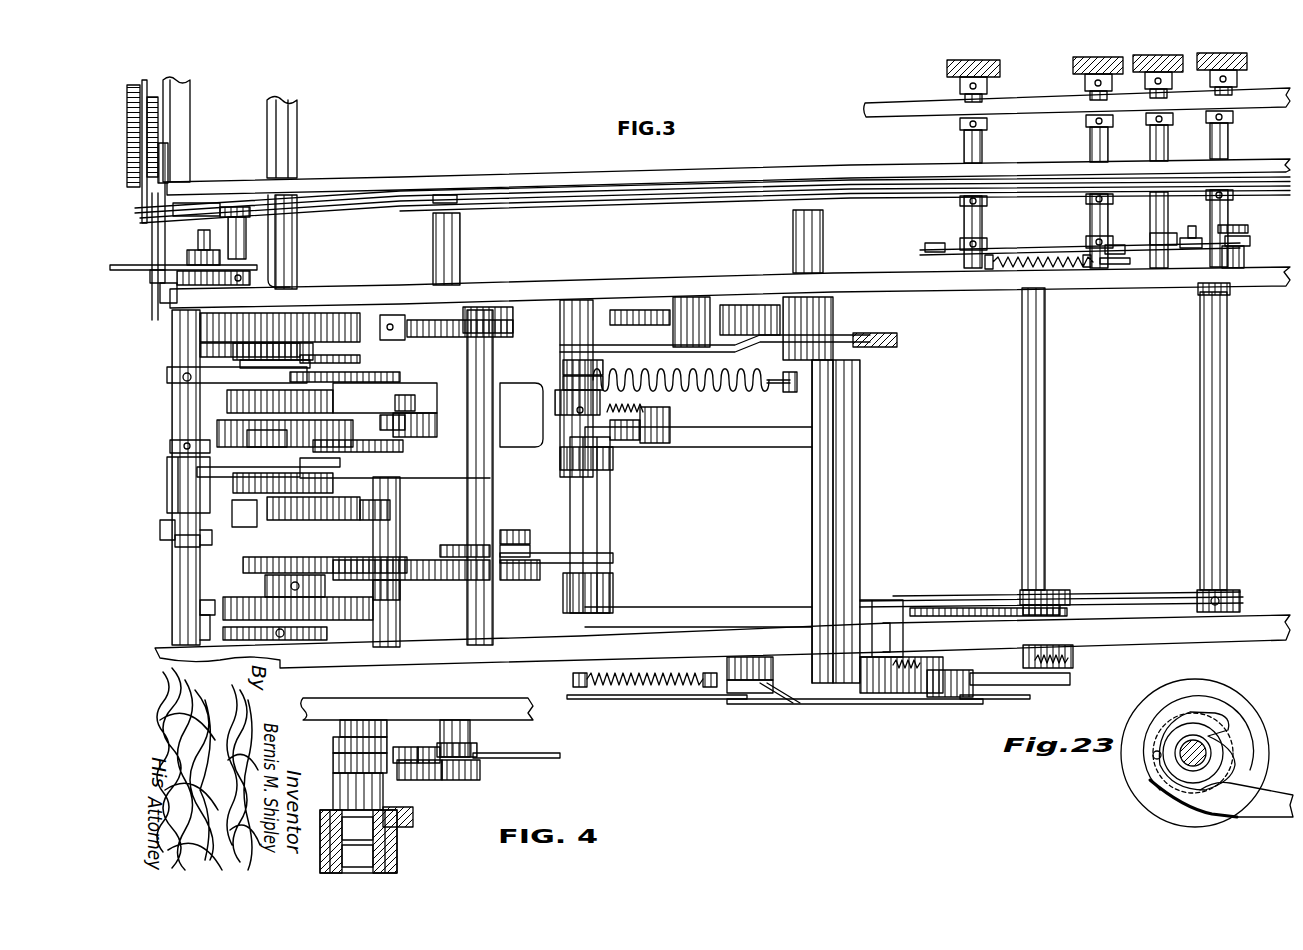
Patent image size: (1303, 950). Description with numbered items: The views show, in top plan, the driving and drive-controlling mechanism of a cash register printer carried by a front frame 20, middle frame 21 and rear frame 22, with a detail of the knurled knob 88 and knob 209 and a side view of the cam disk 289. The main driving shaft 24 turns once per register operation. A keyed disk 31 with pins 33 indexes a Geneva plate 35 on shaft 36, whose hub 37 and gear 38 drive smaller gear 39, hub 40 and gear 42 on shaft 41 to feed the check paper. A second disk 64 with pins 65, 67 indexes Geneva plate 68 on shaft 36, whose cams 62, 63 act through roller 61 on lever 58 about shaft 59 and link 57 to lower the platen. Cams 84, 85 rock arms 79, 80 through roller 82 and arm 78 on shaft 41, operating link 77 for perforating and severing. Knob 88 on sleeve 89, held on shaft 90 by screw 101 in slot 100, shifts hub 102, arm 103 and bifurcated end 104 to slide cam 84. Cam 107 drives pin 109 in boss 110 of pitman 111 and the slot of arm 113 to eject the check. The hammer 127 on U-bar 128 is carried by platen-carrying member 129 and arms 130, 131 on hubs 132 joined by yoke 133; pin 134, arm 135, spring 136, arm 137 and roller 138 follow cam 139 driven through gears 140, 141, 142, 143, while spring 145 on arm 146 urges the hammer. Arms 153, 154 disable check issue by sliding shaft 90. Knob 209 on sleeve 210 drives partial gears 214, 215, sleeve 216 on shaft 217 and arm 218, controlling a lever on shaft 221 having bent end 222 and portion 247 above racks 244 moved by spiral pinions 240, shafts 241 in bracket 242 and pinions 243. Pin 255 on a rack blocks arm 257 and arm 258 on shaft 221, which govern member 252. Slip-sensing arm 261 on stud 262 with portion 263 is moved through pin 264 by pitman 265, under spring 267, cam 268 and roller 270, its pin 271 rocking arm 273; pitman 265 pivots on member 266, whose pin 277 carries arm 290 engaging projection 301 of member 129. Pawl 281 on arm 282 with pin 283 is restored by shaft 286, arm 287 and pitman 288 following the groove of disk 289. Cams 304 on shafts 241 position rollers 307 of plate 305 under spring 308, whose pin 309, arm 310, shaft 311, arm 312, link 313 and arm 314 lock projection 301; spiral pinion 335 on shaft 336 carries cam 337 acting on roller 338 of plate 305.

In FIG. 3, the front frame 20 is at (1148, 640).
In FIG. 4, the front frame 20 is at (528, 720).
In FIG. 3, the middle frame 21 is at (1100, 290).
In FIG. 3, the rear frame 22 is at (855, 172).
In FIG. 3, the main driving shaft 24 is at (290, 160).
In FIG. 4, the main driving shaft 24 is at (455, 742).
In FIG. 23, the main driving shaft 24 is at (1183, 757).
In FIG. 3, the disk 31 is at (217, 420).
In FIG. 3, the pins 33 is at (227, 400).
In FIG. 3, the Geneva plate 35 is at (405, 425).
In FIG. 3, the shaft 36 is at (395, 535).
In FIG. 3, the hub 37 is at (370, 393).
In FIG. 3, the gear 38 is at (415, 405).
In FIG. 3, the smaller gear 39 is at (563, 383).
In FIG. 3, the hub 40 is at (563, 372).
In FIG. 3, the shaft 41 is at (500, 520).
In FIG. 3, the gear 42 is at (488, 340).
In FIG. 3, the link 57 is at (880, 340).
In FIG. 3, the lever 58 is at (680, 347).
In FIG. 3, the shaft 59 is at (603, 380).
In FIG. 3, the anti-friction roller 61 is at (395, 350).
In FIG. 3, the cam 62 is at (300, 378).
In FIG. 3, the cam 63 is at (320, 360).
In FIG. 3, the disk 64 is at (175, 450).
In FIG. 3, the pin 65 is at (220, 440).
In FIG. 3, the pin 67 is at (340, 452).
In FIG. 3, the Geneva plate 68 is at (410, 440).
In FIG. 3, the link 77 is at (660, 315).
In FIG. 3, the arm 78 is at (545, 322).
In FIG. 3, the arm 79 is at (345, 480).
In FIG. 3, the arm 80 is at (398, 520).
In FIG. 3, the anti-friction roller 82 is at (290, 490).
In FIG. 3, the cam 84 is at (257, 500).
In FIG. 3, the cam 85 is at (260, 525).
In FIG. 4, the knurled knob 88 is at (387, 852).
In FIG. 3, the sleeve 89 is at (208, 540).
In FIG. 3, the shaft 90 is at (172, 335).
In FIG. 3, the slot 100 is at (185, 545).
In FIG. 3, the screw 101 is at (170, 530).
In FIG. 3, the hub 102 is at (167, 470).
In FIG. 3, the arm 103 is at (232, 478).
In FIG. 3, the bifurcated end 104 is at (300, 464).
In FIG. 3, the cam 107 is at (280, 330).
In FIG. 3, the pin 109 is at (250, 368).
In FIG. 3, the boss 110 is at (230, 347).
In FIG. 3, the pitman 111 is at (330, 330).
In FIG. 3, the arm 113 is at (172, 377).
In FIG. 3, the hammer 127 is at (837, 437).
In FIG. 3, the U-bar 128 is at (835, 515).
In FIG. 3, the platen-carrying member 129 is at (815, 518).
In FIG. 3, the arm 130 is at (735, 438).
In FIG. 3, the arm 131 is at (680, 625).
In FIG. 3, the hubs 132 is at (563, 468).
In FIG. 3, the yoke 133 is at (590, 530).
In FIG. 3, the pin 134 is at (655, 405).
In FIG. 3, the arm 135 is at (652, 443).
In FIG. 3, the spring 136 is at (628, 443).
In FIG. 3, the arm 137 is at (545, 555).
In FIG. 3, the anti-friction roller 138 is at (522, 540).
In FIG. 3, the cam 139 is at (462, 537).
In FIG. 3, the gear 140 is at (515, 582).
In FIG. 3, the gear 141 is at (420, 590).
In FIG. 3, the gear 142 is at (410, 562).
In FIG. 3, the gear 143 is at (313, 567).
In FIG. 3, the spring 145 is at (740, 390).
In FIG. 3, the arm 146 is at (555, 400).
In FIG. 3, the arm 153 is at (160, 290).
In FIG. 3, the arm 154 is at (150, 276).
In FIG. 4, the knurled knob 209 is at (413, 815).
In FIG. 4, the sleeve 210 is at (372, 797).
In FIG. 4, the partial gear 214 is at (340, 758).
In FIG. 4, the partial gear 215 is at (345, 745).
In FIG. 3, the sleeve 216 is at (198, 628).
In FIG. 4, the sleeve 216 is at (380, 725).
In FIG. 3, the shaft 217 is at (195, 608).
In FIG. 3, the arm 218 is at (205, 265).
In FIG. 3, the shaft 221 is at (262, 235).
In FIG. 3, the bent end 222 is at (152, 318).
In FIG. 3, the spiral pinion 240 is at (1000, 66).
In FIG. 3, the shaft 241 is at (983, 150).
In FIG. 3, the bracket 242 is at (893, 105).
In FIG. 3, the pinion 243 is at (1092, 206).
In FIG. 3, the rack 244 is at (648, 207).
In FIG. 3, the portion 247 is at (273, 265).
In FIG. 3, the member 252 is at (140, 265).
In FIG. 3, the pin 255 is at (178, 208).
In FIG. 3, the arm 257 is at (218, 210).
In FIG. 3, the arm 258 is at (255, 285).
In FIG. 3, the arm 261 is at (820, 704).
In FIG. 3, the stud 262 is at (750, 662).
In FIG. 3, the upwardly extending portion 263 is at (978, 699).
In FIG. 3, the pin 264 is at (745, 698).
In FIG. 3, the pitman 265 is at (612, 699).
In FIG. 4, the pitman 265 is at (555, 758).
In FIG. 3, the member 266 is at (905, 695).
In FIG. 3, the spring 267 is at (630, 684).
In FIG. 4, the cam 268 is at (470, 782).
In FIG. 4, the roller 270 is at (420, 782).
In FIG. 4, the pin 271 is at (418, 750).
In FIG. 4, the arm 273 is at (400, 750).
In FIG. 3, the pin 277 is at (950, 698).
In FIG. 3, the pawl 281 is at (1013, 685).
In FIG. 3, the arm 282 is at (1070, 674).
In FIG. 3, the pin 283 is at (1023, 660).
In FIG. 3, the shaft 286 is at (1035, 418).
In FIG. 3, the arm 287 is at (1055, 597).
In FIG. 3, the pitman 288 is at (905, 605).
In FIG. 23, the pitman 288 is at (1270, 817).
In FIG. 3, the disk 289 is at (275, 612).
In FIG. 23, the disk 289 is at (1245, 735).
In FIG. 3, the arm 290 is at (920, 665).
In FIG. 3, the projecting portion 301 is at (885, 620).
In FIG. 3, the cam 304 is at (985, 245).
In FIG. 3, the plate 305 is at (1010, 252).
In FIG. 3, the anti-friction rollers 307 is at (935, 243).
In FIG. 3, the spring 308 is at (1035, 262).
In FIG. 3, the pin 309 is at (1245, 255).
In FIG. 3, the arm 310 is at (1228, 290).
In FIG. 3, the shaft 311 is at (1200, 345).
In FIG. 3, the arm 312 is at (1198, 606).
In FIG. 3, the link 313 is at (1132, 605).
In FIG. 3, the arm 314 is at (930, 618).
In FIG. 3, the spiral pinion 335 is at (1245, 62).
In FIG. 3, the shaft 336 is at (1225, 140).
In FIG. 3, the cam 337 is at (1240, 243).
In FIG. 3, the roller 338 is at (1185, 238).